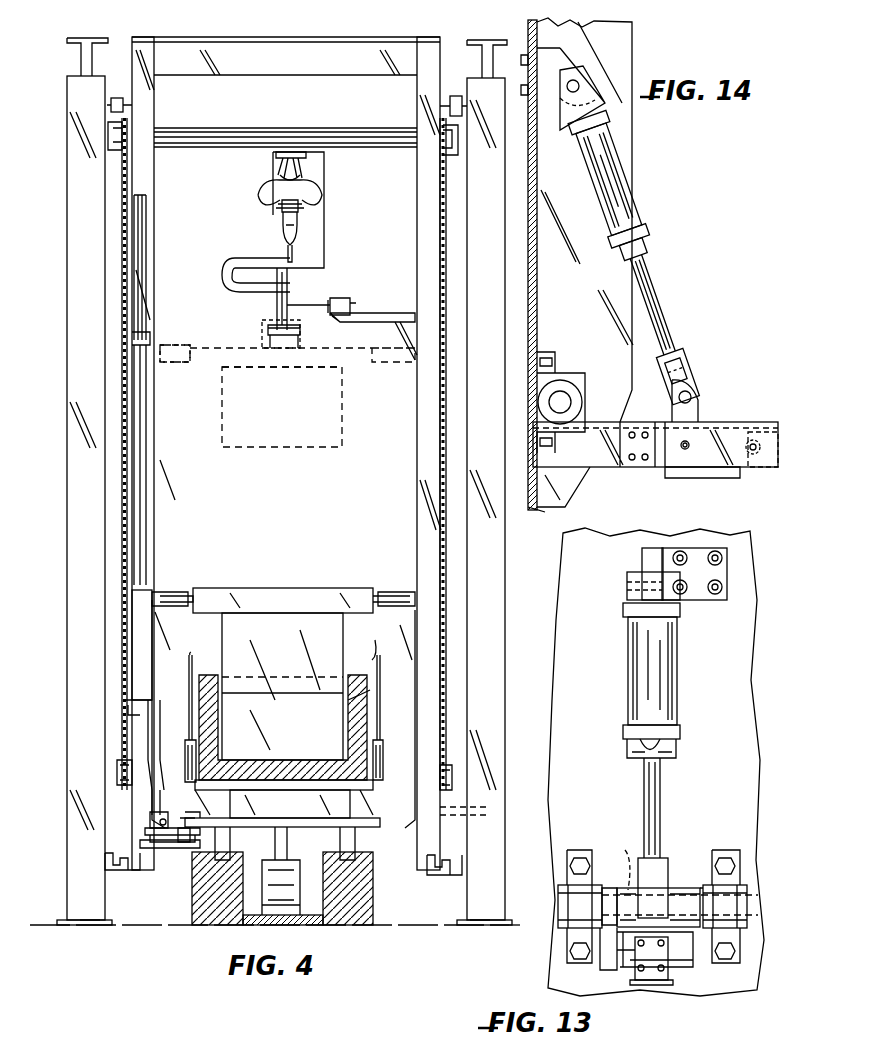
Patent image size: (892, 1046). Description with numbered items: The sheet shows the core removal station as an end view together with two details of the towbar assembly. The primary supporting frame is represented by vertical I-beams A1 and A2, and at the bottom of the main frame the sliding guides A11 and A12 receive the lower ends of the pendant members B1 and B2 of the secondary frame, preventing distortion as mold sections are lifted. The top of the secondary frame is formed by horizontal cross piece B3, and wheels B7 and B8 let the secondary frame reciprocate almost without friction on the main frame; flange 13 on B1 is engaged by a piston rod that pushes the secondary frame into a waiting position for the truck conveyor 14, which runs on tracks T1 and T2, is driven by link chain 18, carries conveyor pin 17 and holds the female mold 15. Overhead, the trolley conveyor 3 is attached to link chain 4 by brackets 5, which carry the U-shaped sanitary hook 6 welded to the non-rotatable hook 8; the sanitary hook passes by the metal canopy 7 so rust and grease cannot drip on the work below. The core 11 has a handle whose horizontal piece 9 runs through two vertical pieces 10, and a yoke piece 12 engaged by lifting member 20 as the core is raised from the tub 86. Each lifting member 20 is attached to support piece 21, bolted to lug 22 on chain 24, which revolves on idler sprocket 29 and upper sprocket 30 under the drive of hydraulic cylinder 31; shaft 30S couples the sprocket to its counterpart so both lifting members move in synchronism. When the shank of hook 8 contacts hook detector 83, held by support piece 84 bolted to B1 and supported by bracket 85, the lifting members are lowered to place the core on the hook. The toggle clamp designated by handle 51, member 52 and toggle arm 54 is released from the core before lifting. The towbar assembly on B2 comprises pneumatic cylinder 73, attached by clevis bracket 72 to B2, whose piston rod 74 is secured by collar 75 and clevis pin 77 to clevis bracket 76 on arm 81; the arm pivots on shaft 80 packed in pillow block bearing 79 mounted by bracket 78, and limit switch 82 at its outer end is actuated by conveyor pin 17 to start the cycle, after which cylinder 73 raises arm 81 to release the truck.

In FIG. 4, the trolley conveyor 3 is at (272, 162).
In FIG. 4, the link chain 4 is at (278, 210).
In FIG. 4, the bracket 5 is at (283, 232).
In FIG. 4, the sanitary hook 6 is at (222, 264).
In FIG. 4, the metal canopy 7 is at (324, 185).
In FIG. 4, the non-rotatable hook 8 is at (277, 305).
In FIG. 4, the horizontal piece 9 is at (298, 328).
In FIG. 4, the vertical pieces 10 is at (262, 333).
In FIG. 4, the core 11 is at (290, 400).
In FIG. 4, the yoke piece 12 is at (182, 358).
In FIG. 4, the flange 13 is at (490, 812).
In FIG. 4, the truck conveyor 14 is at (370, 780).
In FIG. 4, the female mold 15 is at (365, 745).
In FIG. 4, the conveyor pin 17 is at (185, 815).
In FIG. 4, the link chain 18 is at (296, 890).
In FIG. 4, the lifting member 20 is at (160, 345).
In FIG. 4, the support piece 21 is at (145, 622).
In FIG. 4, the lug 22 is at (128, 702).
In FIG. 4, the chain 24 is at (122, 560).
In FIG. 4, the idler sprocket 29 is at (120, 785).
In FIG. 4, the sprocket 30 is at (112, 140).
In FIG. 4, the shaft 30S is at (318, 130).
In FIG. 4, the hydraulic cylinder 31 is at (148, 248).
In FIG. 4, the handle 51 is at (170, 685).
In FIG. 4, the toggle clamp 52 is at (190, 702).
In FIG. 4, the toggle arm 54 is at (378, 665).
In FIG. 14, the clevis bracket 72 is at (575, 68).
In FIG. 13, the clevis bracket 72 is at (705, 595).
In FIG. 4, the pneumatic cylinder 73 is at (160, 775).
In FIG. 14, the pneumatic cylinder 73 is at (641, 176).
In FIG. 13, the pneumatic cylinder 73 is at (665, 645).
In FIG. 4, the piston rod 74 is at (158, 790).
In FIG. 14, the piston rod 74 is at (683, 294).
In FIG. 13, the piston rod 74 is at (660, 830).
In FIG. 4, the collar 75 is at (165, 812).
In FIG. 14, the collar 75 is at (706, 366).
In FIG. 13, the collar 75 is at (645, 860).
In FIG. 4, the clevis bracket 76 is at (172, 812).
In FIG. 14, the clevis bracket 76 is at (695, 413).
In FIG. 13, the clevis bracket 76 is at (705, 888).
In FIG. 4, the clevis pin 77 is at (163, 826).
In FIG. 14, the clevis pin 77 is at (692, 397).
In FIG. 13, the clevis pin 77 is at (636, 852).
In FIG. 14, the bracket 78 is at (553, 375).
In FIG. 13, the bracket 78 is at (730, 858).
In FIG. 14, the pillow block bearing 79 is at (580, 415).
In FIG. 13, the pillow block bearing 79 is at (748, 893).
In FIG. 14, the shaft 80 is at (563, 400).
In FIG. 13, the shaft 80 is at (745, 910).
In FIG. 4, the arm 81 is at (170, 848).
In FIG. 14, the arm 81 is at (755, 422).
In FIG. 13, the arm 81 is at (700, 965).
In FIG. 4, the limit switch 82 is at (182, 836).
In FIG. 14, the limit switch 82 is at (775, 440).
In FIG. 13, the limit switch 82 is at (660, 970).
In FIG. 4, the hook detector 83 is at (318, 302).
In FIG. 4, the support piece 84 is at (362, 318).
In FIG. 4, the bracket 85 is at (400, 338).
In FIG. 4, the tub 86 is at (360, 705).
In FIG. 4, the vertical I-beam A1 is at (98, 496).
In FIG. 4, the vertical I-beam A2 is at (498, 473).
In FIG. 4, the sliding guide A11 is at (430, 885).
In FIG. 4, the sliding guide A12 is at (120, 900).
In FIG. 4, the pendant member B1 is at (400, 505).
In FIG. 4, the pendant member B2 is at (142, 55).
In FIG. 14, the pendant member B2 is at (537, 270).
In FIG. 13, the pendant member B2 is at (596, 597).
In FIG. 4, the horizontal cross piece B3 is at (305, 55).
In FIG. 4, the wheels B7 is at (448, 98).
In FIG. 4, the wheels B8 is at (110, 104).
In FIG. 4, the track T1 is at (200, 912).
In FIG. 4, the track T2 is at (372, 888).